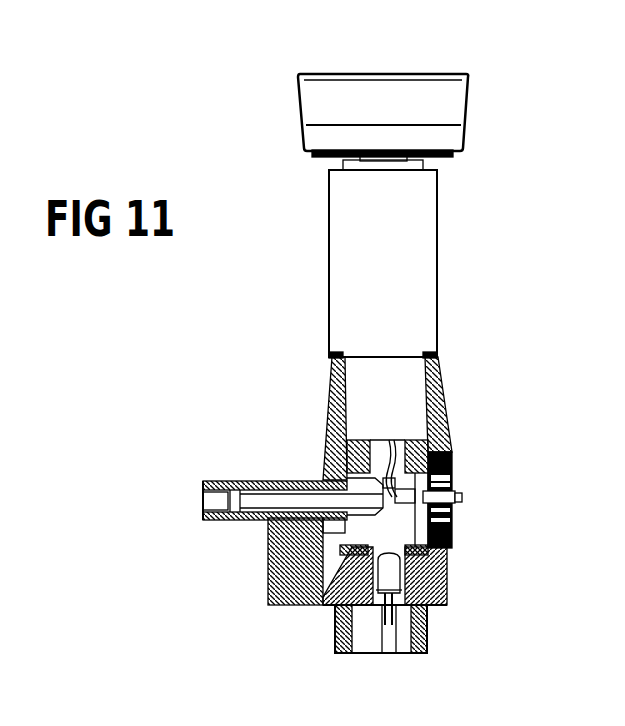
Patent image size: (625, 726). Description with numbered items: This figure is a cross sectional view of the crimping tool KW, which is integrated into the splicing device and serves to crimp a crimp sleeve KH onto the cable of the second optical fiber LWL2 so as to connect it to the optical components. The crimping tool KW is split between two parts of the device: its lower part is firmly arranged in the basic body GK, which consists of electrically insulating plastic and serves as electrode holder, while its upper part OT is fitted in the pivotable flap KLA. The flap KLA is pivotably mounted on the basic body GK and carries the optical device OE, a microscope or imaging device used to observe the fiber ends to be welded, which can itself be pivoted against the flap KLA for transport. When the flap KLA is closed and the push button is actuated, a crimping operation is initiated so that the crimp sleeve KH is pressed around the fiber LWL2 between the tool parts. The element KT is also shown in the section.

The optical device OE is at (440, 257).
The flap KLA is at (323, 424).
The second optical fiber LWL2 is at (393, 442).
The crimping tool KW is at (460, 454).
The upper part OT is at (455, 475).
The crimp sleeve KH is at (463, 498).
The contact KT is at (455, 513).
The basic body GK is at (447, 583).